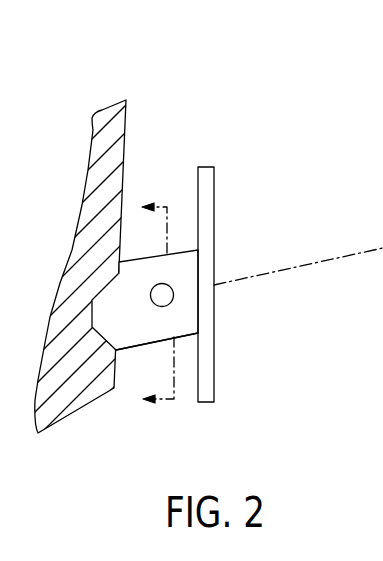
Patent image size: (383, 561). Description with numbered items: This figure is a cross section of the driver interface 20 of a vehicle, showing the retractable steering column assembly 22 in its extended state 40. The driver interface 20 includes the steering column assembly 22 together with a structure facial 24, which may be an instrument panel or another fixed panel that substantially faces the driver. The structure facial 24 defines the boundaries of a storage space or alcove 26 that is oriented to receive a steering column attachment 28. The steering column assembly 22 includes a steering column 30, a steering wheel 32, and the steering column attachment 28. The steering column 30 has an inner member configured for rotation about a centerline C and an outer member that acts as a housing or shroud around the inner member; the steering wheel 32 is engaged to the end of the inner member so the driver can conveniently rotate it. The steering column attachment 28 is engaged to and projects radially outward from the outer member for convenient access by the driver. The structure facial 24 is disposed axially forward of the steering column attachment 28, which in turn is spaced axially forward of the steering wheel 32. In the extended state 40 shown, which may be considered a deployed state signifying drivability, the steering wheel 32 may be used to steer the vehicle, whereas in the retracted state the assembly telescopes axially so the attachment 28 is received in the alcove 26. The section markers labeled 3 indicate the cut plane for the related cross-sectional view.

The driver interface 20 is at (259, 93).
The extended state 40 is at (288, 106).
The retractable steering column assembly 22 is at (170, 157).
The structure facial 24 is at (119, 252).
The alcove 26 is at (104, 309).
The steering column attachment 28 is at (174, 296).
The steering column 30 is at (132, 368).
The steering wheel 32 is at (215, 193).
The centerline C is at (360, 257).
The section line 3- 3 is at (150, 306).